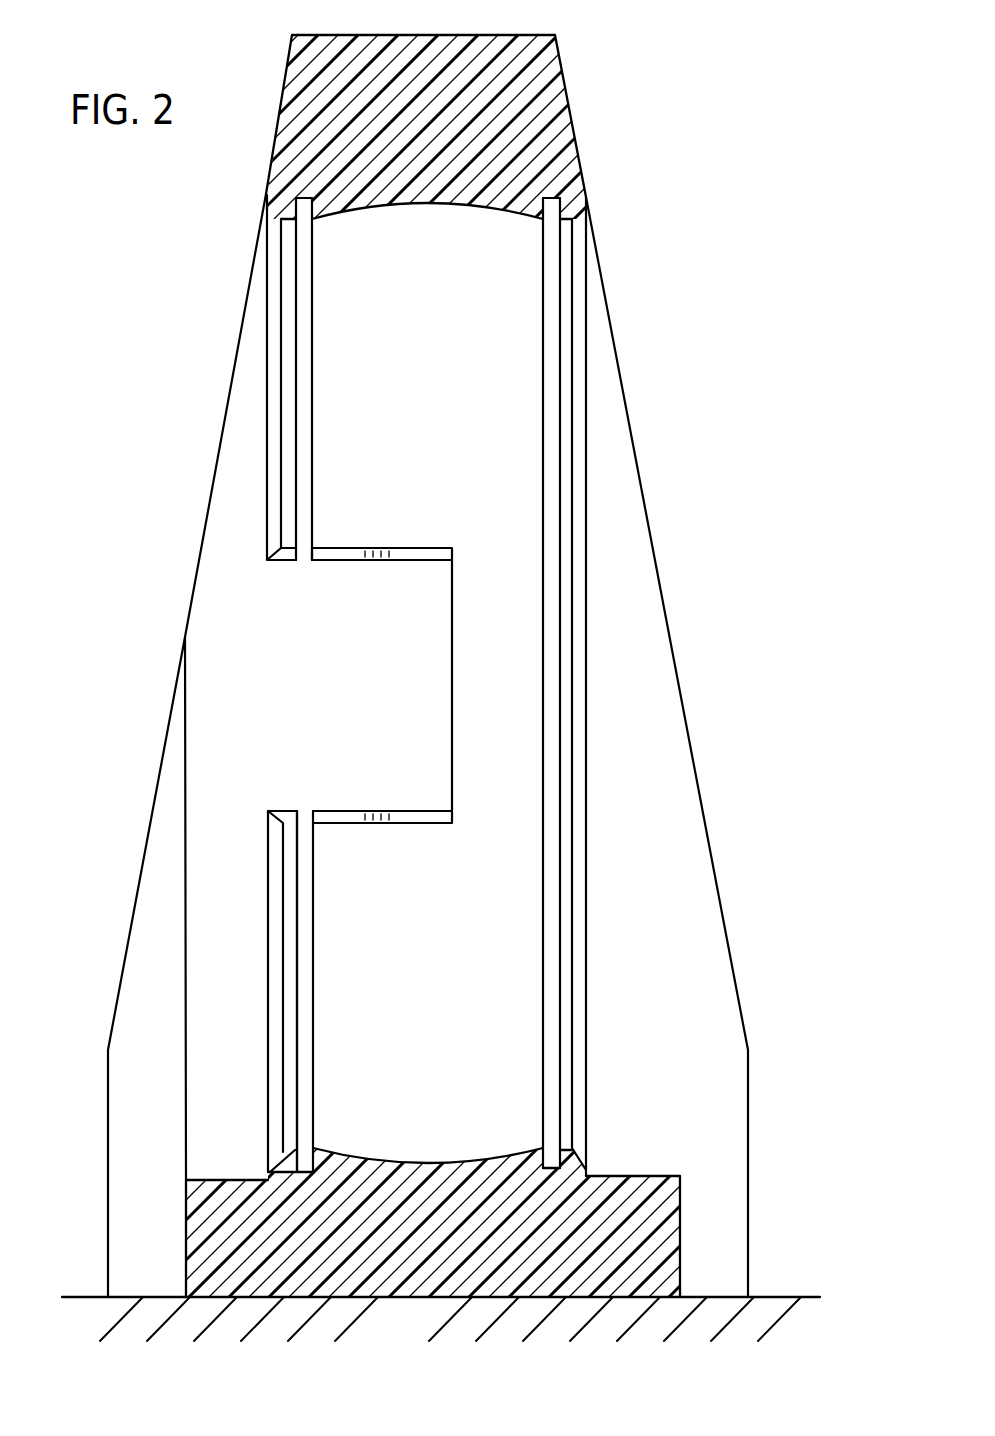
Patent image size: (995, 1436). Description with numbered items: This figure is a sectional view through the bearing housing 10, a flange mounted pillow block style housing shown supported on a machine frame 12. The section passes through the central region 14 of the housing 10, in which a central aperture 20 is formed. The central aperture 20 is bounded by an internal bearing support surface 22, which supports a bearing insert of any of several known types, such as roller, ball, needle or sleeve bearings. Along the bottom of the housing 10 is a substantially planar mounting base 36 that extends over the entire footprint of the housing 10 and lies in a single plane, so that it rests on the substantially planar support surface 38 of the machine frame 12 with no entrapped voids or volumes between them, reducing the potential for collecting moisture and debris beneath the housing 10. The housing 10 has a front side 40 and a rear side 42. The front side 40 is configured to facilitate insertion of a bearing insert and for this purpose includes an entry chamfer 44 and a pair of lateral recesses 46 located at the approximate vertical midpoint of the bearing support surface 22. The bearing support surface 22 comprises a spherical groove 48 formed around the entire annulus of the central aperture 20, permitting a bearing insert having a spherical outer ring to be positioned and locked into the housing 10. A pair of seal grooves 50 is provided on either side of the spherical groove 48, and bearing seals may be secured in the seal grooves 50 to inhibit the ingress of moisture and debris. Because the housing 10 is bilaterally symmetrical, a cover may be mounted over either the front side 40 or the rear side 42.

The bearing housing 10 is at (542, 36).
The machine frame 12 is at (560, 1336).
The central region 14 is at (540, 120).
The central aperture 20 is at (226, 370).
The internal bearing support surface 22 is at (528, 375).
The mounting base 36 is at (430, 1296).
The support surface 38 is at (776, 1295).
The front side 40 is at (208, 1043).
The rear side 42 is at (710, 1036).
The entry chamfer 44 is at (273, 1163).
The lateral recesses 46 is at (302, 578).
The spherical groove 48 is at (431, 450).
The seal grooves 50 is at (300, 210).